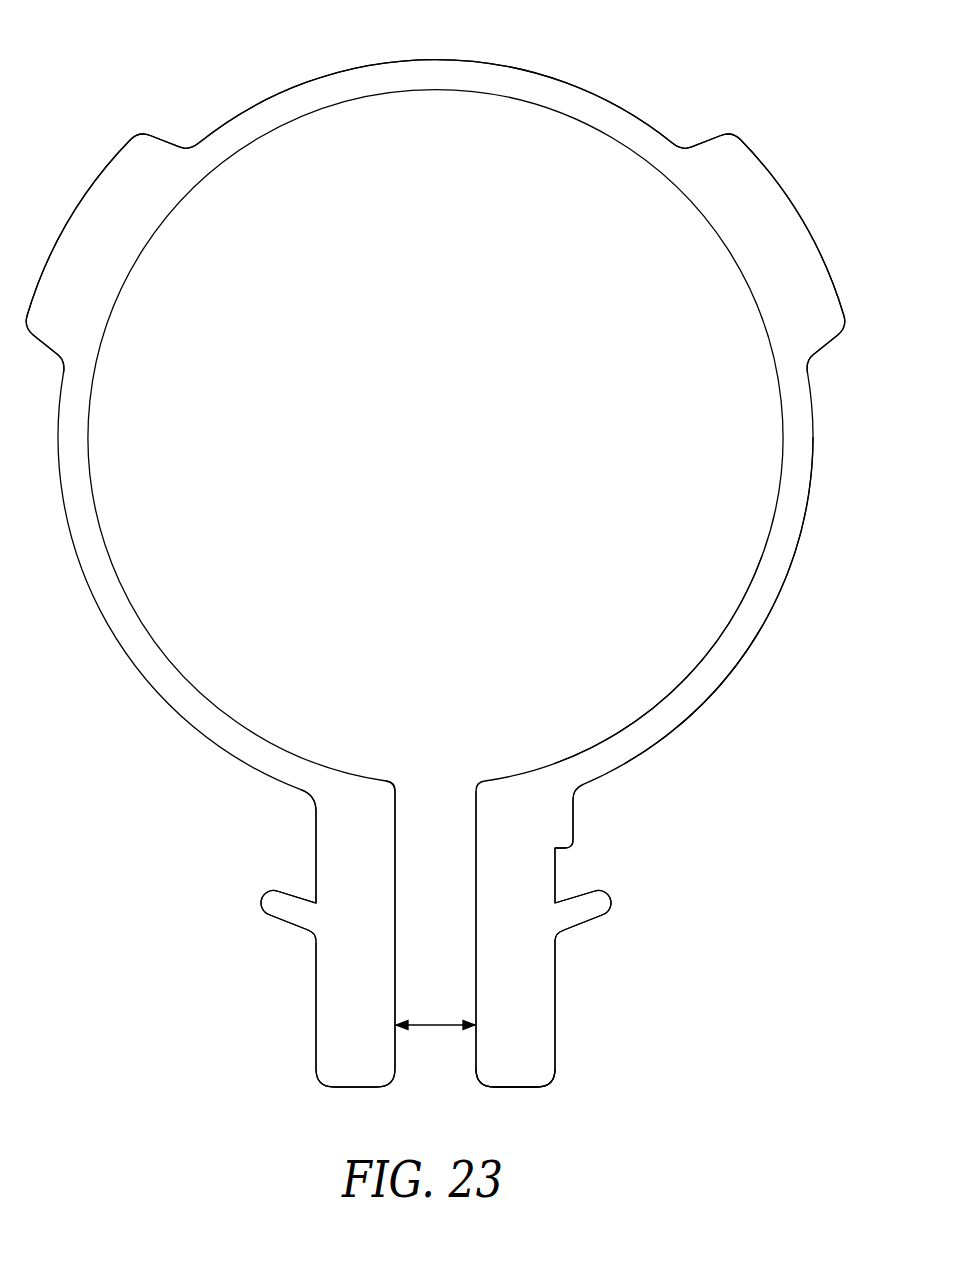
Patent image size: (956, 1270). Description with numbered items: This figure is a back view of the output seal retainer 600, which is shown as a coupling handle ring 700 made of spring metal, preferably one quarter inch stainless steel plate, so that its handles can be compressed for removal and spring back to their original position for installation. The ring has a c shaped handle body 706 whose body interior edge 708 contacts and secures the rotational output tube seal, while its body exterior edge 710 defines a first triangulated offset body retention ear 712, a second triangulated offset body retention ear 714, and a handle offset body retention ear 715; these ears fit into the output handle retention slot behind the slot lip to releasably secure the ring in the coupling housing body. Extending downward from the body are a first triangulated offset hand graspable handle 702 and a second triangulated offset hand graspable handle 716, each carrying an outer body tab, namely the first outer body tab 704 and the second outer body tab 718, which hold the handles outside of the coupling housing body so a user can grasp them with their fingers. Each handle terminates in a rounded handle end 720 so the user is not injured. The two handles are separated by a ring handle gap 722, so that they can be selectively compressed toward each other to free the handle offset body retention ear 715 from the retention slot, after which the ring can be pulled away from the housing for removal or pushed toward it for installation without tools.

The output seal retainer 600 is at (568, 83).
The coupling handle ring 700 is at (637, 118).
The first triangulated offset hand graspable handle 702 is at (352, 1088).
The first outer body tab 704 is at (263, 903).
The c shaped handle body 706 is at (710, 695).
The body interior edge 708 is at (613, 735).
The body exterior edge 710 is at (745, 652).
The first triangulated offset body retention ear 712 is at (110, 157).
The second triangulated offset body retention ear 714 is at (748, 147).
The handle offset body retention ear 715 is at (573, 820).
The second triangulated offset hand graspable handle 716 is at (498, 1088).
The second outer body tab 718 is at (607, 903).
The rounded handle end 720 is at (525, 1088).
The ring handle gap 722 is at (432, 1023).